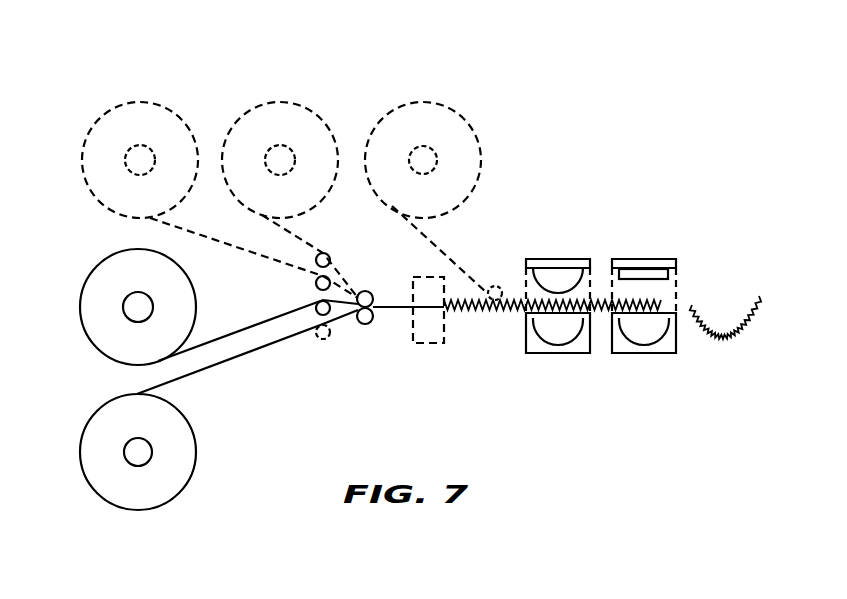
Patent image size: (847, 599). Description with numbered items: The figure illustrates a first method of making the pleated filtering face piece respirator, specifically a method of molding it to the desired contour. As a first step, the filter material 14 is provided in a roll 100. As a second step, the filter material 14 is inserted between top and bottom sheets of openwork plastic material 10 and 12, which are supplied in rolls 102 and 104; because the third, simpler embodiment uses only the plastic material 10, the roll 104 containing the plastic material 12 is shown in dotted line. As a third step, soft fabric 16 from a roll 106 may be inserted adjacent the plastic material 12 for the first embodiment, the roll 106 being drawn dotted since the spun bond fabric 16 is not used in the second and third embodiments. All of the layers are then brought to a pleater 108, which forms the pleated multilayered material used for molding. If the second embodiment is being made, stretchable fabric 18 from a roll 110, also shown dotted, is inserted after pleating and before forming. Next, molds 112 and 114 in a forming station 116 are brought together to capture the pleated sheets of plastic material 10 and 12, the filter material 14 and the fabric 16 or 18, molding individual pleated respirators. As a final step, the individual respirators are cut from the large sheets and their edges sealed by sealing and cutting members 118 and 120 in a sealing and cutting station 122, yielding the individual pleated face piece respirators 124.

The openwork plastic material 10 is at (123, 515).
The openwork plastic material 12 is at (133, 98).
The filter material 14 is at (104, 254).
The soft fabric 16 is at (273, 98).
The stretchable fabric 18 is at (446, 104).
The roll 100 is at (184, 313).
The roll 102 is at (184, 448).
The roll 104 is at (172, 127).
The roll 106 is at (313, 128).
The pleater 108 is at (430, 352).
The roll 110 is at (471, 173).
The mold 112 is at (592, 294).
The mold 114 is at (583, 354).
The forming station 116 is at (562, 255).
The sealing and cutting member 118 is at (680, 308).
The sealing and cutting member 120 is at (668, 354).
The sealing and cutting station 122 is at (645, 257).
The individual pleated face piece respirators 124 is at (760, 297).